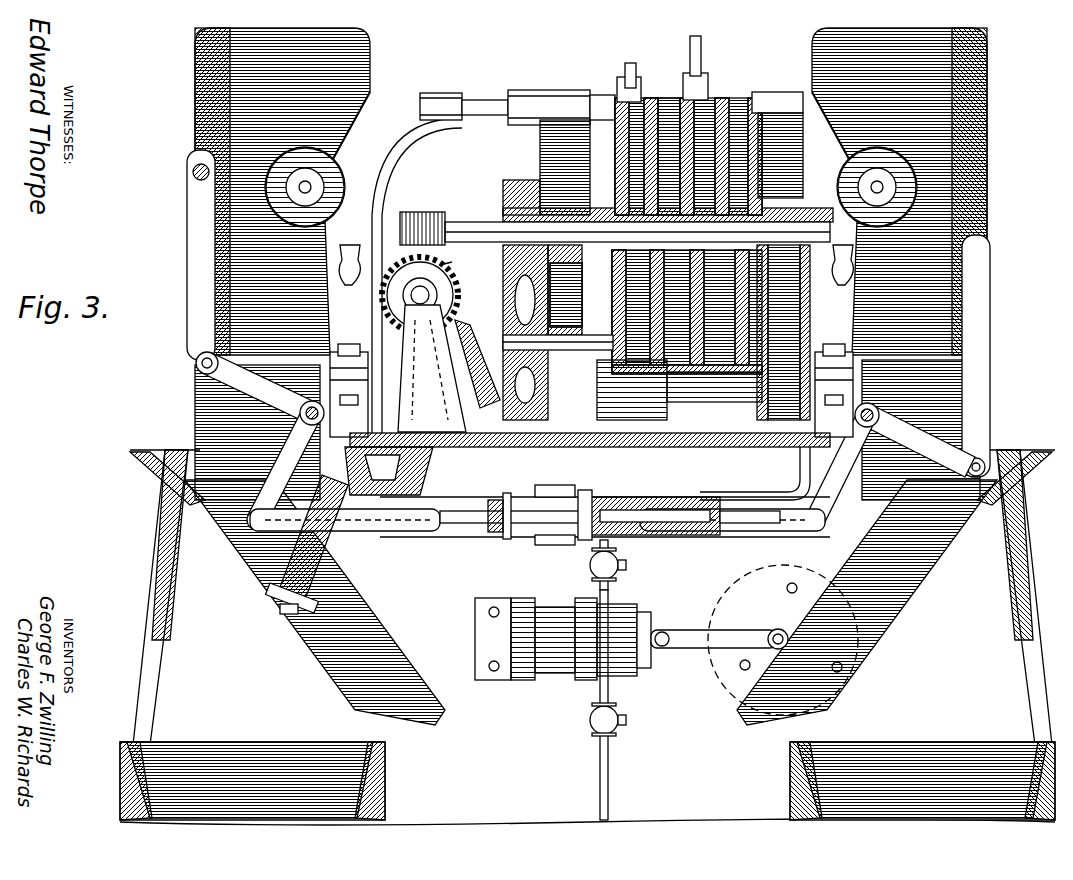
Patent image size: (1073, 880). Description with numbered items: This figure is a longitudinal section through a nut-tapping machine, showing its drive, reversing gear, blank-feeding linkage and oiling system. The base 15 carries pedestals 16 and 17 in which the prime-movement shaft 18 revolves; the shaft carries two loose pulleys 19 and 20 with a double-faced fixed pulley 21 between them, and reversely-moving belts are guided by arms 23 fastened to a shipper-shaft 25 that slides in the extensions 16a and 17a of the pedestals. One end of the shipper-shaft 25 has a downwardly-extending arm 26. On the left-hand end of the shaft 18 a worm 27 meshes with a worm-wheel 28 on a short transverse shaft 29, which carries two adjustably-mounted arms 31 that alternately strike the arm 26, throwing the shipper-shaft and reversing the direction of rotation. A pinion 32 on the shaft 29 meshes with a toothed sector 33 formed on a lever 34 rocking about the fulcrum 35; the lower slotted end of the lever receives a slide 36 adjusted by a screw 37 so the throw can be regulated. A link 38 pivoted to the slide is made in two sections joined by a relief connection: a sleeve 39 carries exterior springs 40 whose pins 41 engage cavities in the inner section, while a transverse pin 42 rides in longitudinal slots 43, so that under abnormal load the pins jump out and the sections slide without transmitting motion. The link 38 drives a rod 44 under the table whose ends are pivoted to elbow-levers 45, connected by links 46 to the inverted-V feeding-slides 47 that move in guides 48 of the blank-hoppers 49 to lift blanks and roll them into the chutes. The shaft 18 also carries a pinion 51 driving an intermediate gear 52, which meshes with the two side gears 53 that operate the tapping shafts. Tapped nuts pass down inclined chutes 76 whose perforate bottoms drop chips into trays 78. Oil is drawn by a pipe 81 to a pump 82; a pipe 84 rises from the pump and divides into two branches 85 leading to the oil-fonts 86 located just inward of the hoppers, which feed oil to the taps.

The base 15 is at (1012, 590).
The pedestal 16 is at (578, 296).
The pedestal extension 16a is at (545, 154).
The pedestal 17 is at (806, 322).
The pedestal extension 17a is at (800, 148).
The prime-movement shaft 18 is at (470, 230).
The loose pulley 19 is at (618, 150).
The loose pulley 20 is at (734, 105).
The double-faced fixed pulley 21 is at (666, 100).
The arm 23 is at (626, 72).
The shipper-shaft 25 is at (482, 112).
The downwardly-extending arm 26 is at (400, 184).
The worm 27 is at (432, 216).
The worm-wheel 28 is at (445, 294).
The transverse shaft 29 is at (430, 300).
The adjustably-mounted arm 31 is at (405, 268).
The pinion 32 is at (455, 265).
The toothed sector 33 is at (462, 358).
The lever 34 is at (420, 466).
The fulcrum 35 is at (410, 408).
The slide 36 is at (352, 560).
The screw 37 is at (330, 575).
The link 38 is at (472, 532).
The sleeve 39 is at (598, 536).
The spring 40 is at (552, 484).
The pin 41 is at (507, 492).
The transverse pin 42 is at (490, 498).
The longitudinal slot 43 is at (588, 492).
The rod 44 is at (408, 531).
The elbow-lever 45 is at (285, 455).
The link 46 is at (195, 290).
The feeding-slide 47 is at (196, 134).
The guide 48 is at (200, 54).
The blank-hopper 49 is at (358, 66).
The pinion 51 is at (508, 182).
The intermediate gear 52 is at (508, 414).
The gear 53 is at (575, 346).
The inclined chute 76 is at (358, 636).
The tray 78 is at (258, 745).
The pipe 81 is at (560, 768).
The pump 82 is at (512, 636).
The pipe 84 is at (560, 592).
The branch 85 is at (365, 306).
The oil-font 86 is at (335, 168).